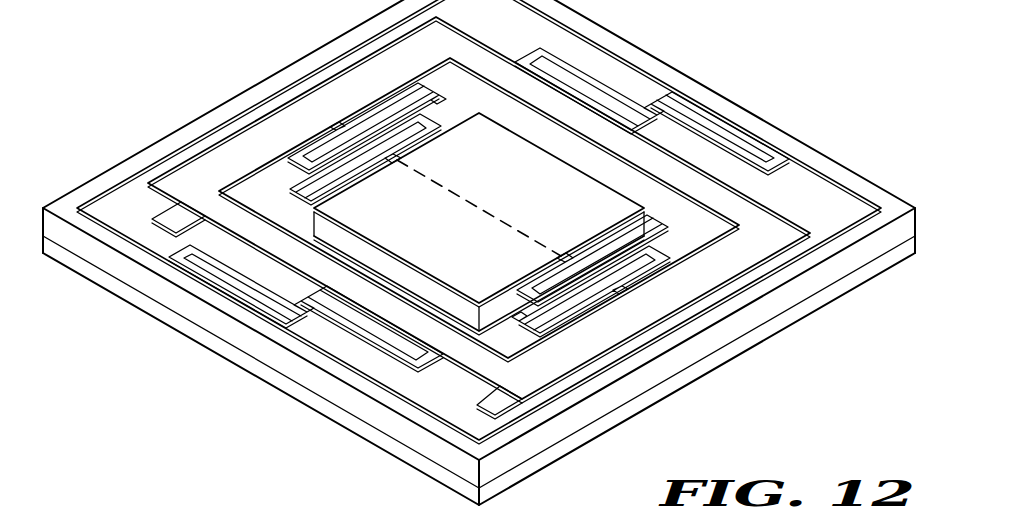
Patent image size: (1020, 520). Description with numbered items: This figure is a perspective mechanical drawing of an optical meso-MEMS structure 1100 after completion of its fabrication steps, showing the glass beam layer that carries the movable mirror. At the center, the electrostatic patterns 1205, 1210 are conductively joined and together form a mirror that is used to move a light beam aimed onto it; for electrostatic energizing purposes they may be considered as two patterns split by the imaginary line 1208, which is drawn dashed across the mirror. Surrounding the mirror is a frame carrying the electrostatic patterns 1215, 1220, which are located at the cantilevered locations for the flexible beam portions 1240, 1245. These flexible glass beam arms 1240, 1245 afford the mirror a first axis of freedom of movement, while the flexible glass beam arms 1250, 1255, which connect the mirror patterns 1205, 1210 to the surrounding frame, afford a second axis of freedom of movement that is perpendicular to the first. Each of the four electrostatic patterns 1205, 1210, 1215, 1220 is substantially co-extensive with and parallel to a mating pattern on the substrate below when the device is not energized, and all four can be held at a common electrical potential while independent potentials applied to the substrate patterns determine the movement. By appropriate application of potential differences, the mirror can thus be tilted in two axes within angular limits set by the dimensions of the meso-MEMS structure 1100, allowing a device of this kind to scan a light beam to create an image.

The optical meso-MEMS structure 1100 is at (869, 441).
The electrostatic pattern 1205 is at (536, 187).
The imaginary line 1208 is at (441, 186).
The electrostatic pattern 1210 is at (455, 246).
The electrostatic pattern 1215 is at (232, 155).
The electrostatic pattern 1220 is at (672, 298).
The flexible glass beam arm 1240 is at (580, 68).
The flexible glass beam arm 1245 is at (203, 267).
The flexible glass beam arm 1250 is at (315, 155).
The flexible glass beam arm 1255 is at (575, 308).